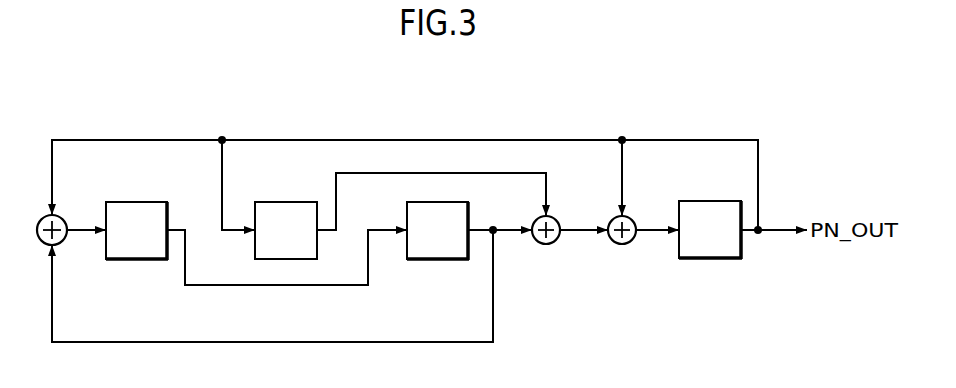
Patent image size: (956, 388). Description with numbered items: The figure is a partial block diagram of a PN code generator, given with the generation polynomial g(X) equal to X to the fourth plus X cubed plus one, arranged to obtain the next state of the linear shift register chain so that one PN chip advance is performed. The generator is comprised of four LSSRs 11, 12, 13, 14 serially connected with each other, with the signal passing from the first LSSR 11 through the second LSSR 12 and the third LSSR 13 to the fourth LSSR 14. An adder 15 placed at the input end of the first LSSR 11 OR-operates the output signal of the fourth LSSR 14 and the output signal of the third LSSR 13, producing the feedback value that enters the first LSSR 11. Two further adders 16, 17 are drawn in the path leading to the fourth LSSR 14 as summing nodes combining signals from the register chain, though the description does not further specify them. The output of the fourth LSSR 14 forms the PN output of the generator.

The first LSSR 11 is at (137, 250).
The second LSSR 12 is at (288, 250).
The third LSSR 13 is at (441, 248).
The fourth LSSR 14 is at (712, 247).
The adder 15 is at (63, 214).
The second exclusive-OR adder 16 is at (546, 246).
The third exclusive-OR adder 17 is at (622, 246).